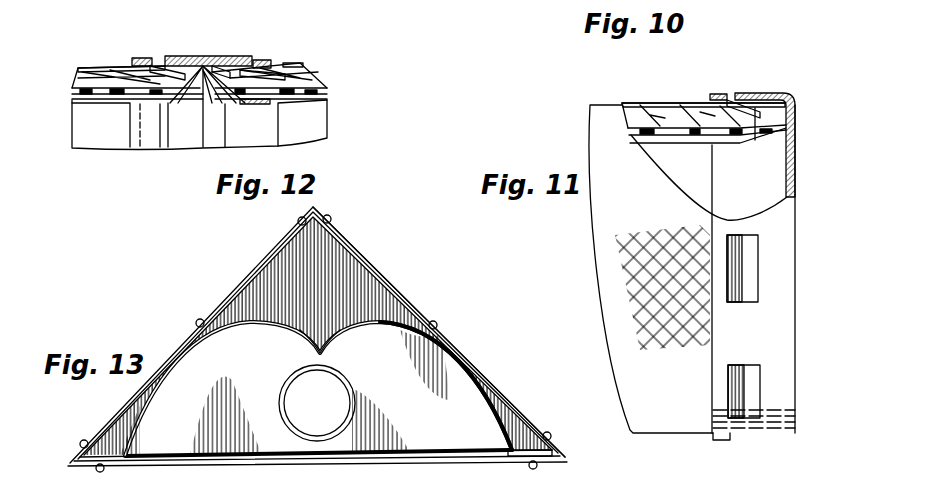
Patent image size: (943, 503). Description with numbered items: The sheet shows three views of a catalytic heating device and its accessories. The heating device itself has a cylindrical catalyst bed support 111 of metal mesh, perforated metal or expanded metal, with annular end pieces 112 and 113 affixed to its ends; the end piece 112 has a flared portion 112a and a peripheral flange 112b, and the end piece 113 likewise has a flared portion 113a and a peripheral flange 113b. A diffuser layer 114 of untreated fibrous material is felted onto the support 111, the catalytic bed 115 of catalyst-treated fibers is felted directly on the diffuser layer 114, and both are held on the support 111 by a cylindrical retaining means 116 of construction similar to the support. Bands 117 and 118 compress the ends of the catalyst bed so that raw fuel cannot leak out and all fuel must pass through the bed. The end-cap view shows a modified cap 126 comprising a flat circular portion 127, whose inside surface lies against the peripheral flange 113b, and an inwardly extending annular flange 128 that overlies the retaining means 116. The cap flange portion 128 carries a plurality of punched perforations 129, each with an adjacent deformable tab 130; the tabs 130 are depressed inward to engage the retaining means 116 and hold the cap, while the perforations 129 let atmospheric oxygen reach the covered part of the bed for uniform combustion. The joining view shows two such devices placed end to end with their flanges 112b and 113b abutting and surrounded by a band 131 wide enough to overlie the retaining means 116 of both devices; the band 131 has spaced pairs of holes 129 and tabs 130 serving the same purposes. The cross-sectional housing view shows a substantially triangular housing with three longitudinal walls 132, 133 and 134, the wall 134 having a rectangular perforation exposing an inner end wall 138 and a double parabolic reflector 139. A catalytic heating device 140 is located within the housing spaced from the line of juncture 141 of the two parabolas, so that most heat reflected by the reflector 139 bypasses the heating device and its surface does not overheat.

In FIG. 12, the cylindrical catalyst bed support 111 is at (102, 106).
In FIG. 11, the cylindrical catalyst bed support 111 is at (656, 142).
In FIG. 12, the annular end piece 112 is at (260, 106).
In FIG. 12, the flared portion 112a is at (216, 98).
In FIG. 12, the peripheral flange 112b is at (216, 58).
In FIG. 12, the annular end piece 113 is at (142, 106).
In FIG. 11, the annular end piece 113 is at (722, 146).
In FIG. 12, the flared portion 113a is at (206, 96).
In FIG. 11, the flared portion 113a is at (795, 133).
In FIG. 12, the peripheral flange 113b is at (200, 58).
In FIG. 11, the peripheral flange 113b is at (795, 112).
In FIG. 12, the fibrous diffuser layer 114 is at (80, 91).
In FIG. 11, the fibrous diffuser layer 114 is at (680, 128).
In FIG. 12, the catalytic bed 115 is at (82, 74).
In FIG. 11, the catalytic bed 115 is at (642, 108).
In FIG. 12, the cylindrical retaining means 116 is at (100, 67).
In FIG. 11, the cylindrical retaining means 116 is at (668, 110).
In FIG. 12, the band 117 is at (238, 106).
In FIG. 12, the band 118 is at (166, 106).
In FIG. 11, the band 118 is at (758, 138).
In FIG. 11, the cap 126 is at (796, 222).
In FIG. 11, the flat circular portion 127 is at (795, 186).
In FIG. 11, the annular flange 128 is at (720, 442).
In FIG. 12, the perforations 129 is at (160, 66).
In FIG. 11, the perforations 129 is at (730, 94).
In FIG. 12, the deformable tabs 130 is at (170, 58).
In FIG. 11, the deformable tabs 130 is at (752, 94).
In FIG. 12, the band 131 is at (203, 50).
In FIG. 13, the longitudinal wall 132 is at (317, 347).
In FIG. 13, the longitudinal wall 133 is at (404, 300).
In FIG. 13, the longitudinal wall 134 is at (512, 460).
In FIG. 13, the inner end wall 138 is at (432, 444).
In FIG. 13, the double parabolic reflector 139 is at (482, 424).
In FIG. 13, the catalytic heating device 140 is at (343, 381).
In FIG. 13, the line of juncture 141 is at (326, 356).